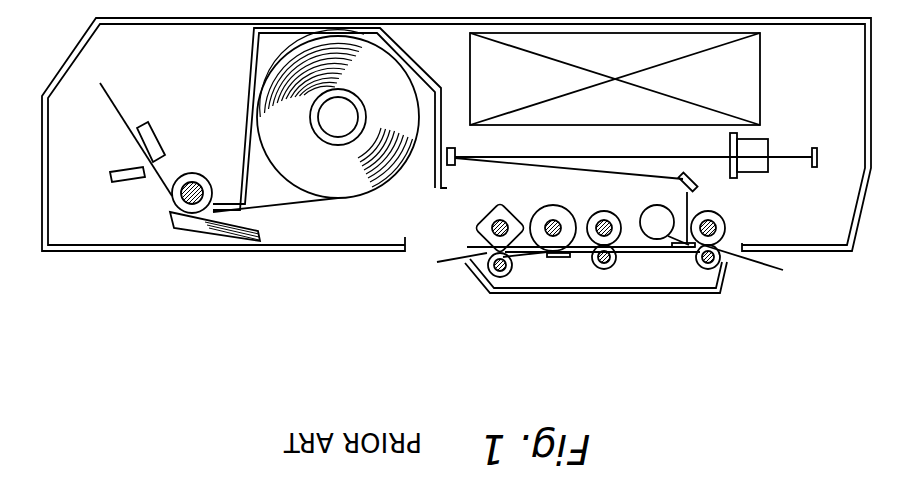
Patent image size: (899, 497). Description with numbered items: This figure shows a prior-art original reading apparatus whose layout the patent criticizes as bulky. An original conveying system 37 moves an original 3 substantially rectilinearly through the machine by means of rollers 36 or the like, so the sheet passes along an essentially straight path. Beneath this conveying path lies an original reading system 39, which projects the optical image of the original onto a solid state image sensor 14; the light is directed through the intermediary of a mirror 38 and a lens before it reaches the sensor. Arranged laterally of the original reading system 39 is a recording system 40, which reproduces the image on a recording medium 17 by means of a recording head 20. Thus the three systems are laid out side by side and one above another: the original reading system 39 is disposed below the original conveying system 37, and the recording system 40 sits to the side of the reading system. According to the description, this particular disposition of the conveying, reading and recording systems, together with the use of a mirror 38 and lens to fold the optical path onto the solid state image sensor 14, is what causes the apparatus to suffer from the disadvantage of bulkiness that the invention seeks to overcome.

The original 3 is at (437, 263).
The solid state image sensor 14 is at (806, 150).
The recording medium 17 is at (327, 200).
The recording head 20 is at (191, 226).
The rollers 36 is at (566, 215).
The original conveying system 37 is at (692, 347).
The mirror 38 is at (457, 167).
The original reading system 39 is at (872, 284).
The recording system 40 is at (238, 305).